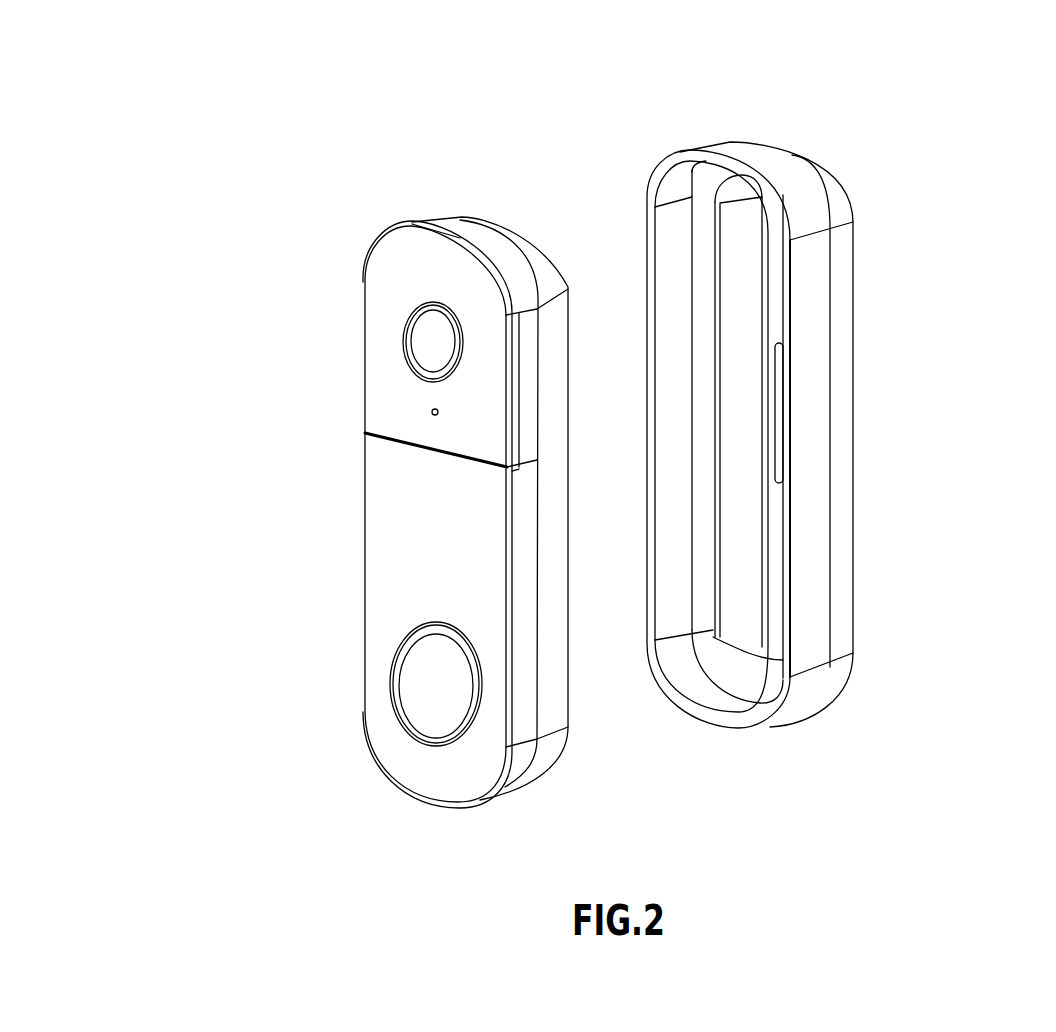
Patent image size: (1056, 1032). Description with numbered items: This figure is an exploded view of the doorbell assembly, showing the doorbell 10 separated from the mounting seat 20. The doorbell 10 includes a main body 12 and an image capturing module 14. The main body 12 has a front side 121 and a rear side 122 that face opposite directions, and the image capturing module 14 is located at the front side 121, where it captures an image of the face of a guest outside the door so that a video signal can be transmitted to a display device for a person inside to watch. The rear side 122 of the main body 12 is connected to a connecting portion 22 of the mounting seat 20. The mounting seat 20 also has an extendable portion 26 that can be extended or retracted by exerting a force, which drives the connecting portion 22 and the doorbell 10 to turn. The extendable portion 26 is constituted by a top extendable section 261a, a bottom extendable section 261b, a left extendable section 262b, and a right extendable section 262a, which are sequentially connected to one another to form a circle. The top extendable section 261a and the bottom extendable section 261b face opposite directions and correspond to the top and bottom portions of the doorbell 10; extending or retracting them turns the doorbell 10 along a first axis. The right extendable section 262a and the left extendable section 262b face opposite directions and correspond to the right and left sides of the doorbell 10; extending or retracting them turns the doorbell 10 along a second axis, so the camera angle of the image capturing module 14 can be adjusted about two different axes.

The doorbell 10 is at (372, 232).
The main body 12 is at (363, 308).
The image capturing module 14 is at (427, 343).
The front side 121 is at (398, 515).
The rear side 122 is at (570, 582).
The mounting seat 20 is at (762, 107).
The connecting portion 22 is at (680, 153).
The extendable portion 26 is at (855, 248).
The top extendable section 261a is at (805, 163).
The bottom extendable section 261b is at (772, 660).
The right extendable section 262a is at (740, 282).
The left extendable section 262b is at (838, 425).